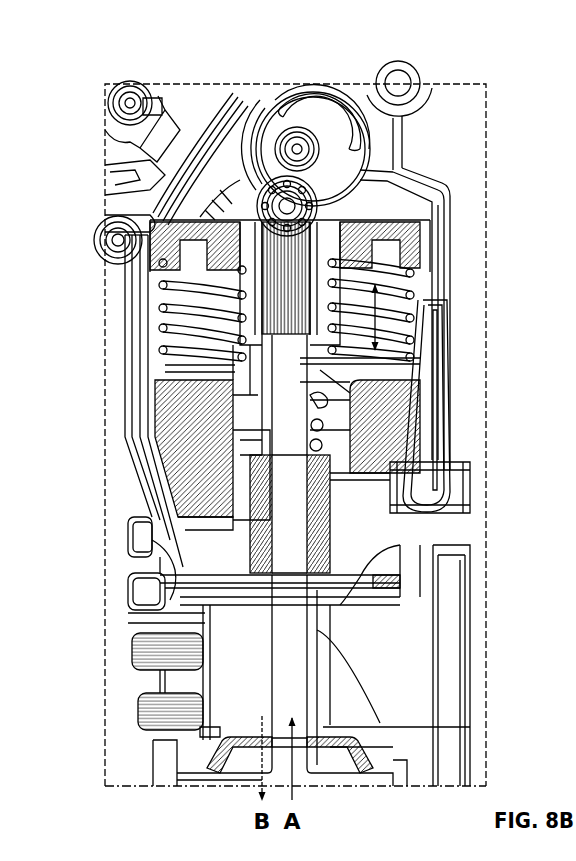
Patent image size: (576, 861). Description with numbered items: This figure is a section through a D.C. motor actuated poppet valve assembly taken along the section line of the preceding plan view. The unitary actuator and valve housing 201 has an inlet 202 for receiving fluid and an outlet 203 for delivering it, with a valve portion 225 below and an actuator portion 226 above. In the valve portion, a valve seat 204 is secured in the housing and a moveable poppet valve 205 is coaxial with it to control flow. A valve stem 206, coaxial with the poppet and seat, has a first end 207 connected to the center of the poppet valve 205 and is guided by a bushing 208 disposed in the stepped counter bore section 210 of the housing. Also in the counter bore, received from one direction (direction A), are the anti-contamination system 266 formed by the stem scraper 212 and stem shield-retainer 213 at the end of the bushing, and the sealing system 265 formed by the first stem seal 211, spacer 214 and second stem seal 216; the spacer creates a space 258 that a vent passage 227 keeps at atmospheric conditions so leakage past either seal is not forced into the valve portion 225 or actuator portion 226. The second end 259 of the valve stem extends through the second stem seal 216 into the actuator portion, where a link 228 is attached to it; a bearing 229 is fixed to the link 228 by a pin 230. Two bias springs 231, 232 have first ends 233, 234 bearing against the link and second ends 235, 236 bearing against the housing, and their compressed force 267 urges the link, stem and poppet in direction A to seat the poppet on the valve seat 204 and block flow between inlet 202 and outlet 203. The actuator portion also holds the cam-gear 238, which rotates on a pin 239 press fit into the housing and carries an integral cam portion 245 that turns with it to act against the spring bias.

The cam-gear 238 is at (240, 125).
The pin 239 is at (288, 147).
The pin 230 is at (242, 186).
The bearing 229 is at (272, 200).
The link 228 is at (235, 258).
The cam portion 245 is at (369, 141).
The first end of bias spring 233 is at (410, 245).
The first end of bias spring 234 is at (158, 238).
The bias spring 231 is at (387, 302).
The compressed force 267 is at (423, 295).
The second end of valve stem 259 is at (280, 291).
The actuator portion 226 is at (427, 318).
The bias spring 232 is at (160, 328).
The second end of bias spring 236 is at (160, 349).
The second end of bias spring 235 is at (417, 360).
The second stem seal 216 is at (400, 388).
The vent passage 227 is at (257, 423).
The sealing system 265 is at (340, 410).
The space 258 is at (262, 470).
The spacer 214 is at (316, 421).
The first stem seal 211 is at (332, 442).
The counter bore section 210 is at (440, 495).
The bushing 208 is at (272, 490).
The stem scraper 212 is at (134, 550).
The anti-contamination system 266 is at (240, 598).
The stem shield-retainer 213 is at (250, 604).
The valve housing 201 is at (130, 652).
The valve stem 206 is at (296, 673).
The valve seat 204 is at (186, 746).
The poppet valve 205 is at (247, 753).
The inlet 202 is at (312, 803).
The first end of valve stem 207 is at (317, 758).
The valve portion 225 is at (390, 622).
The outlet 203 is at (450, 684).